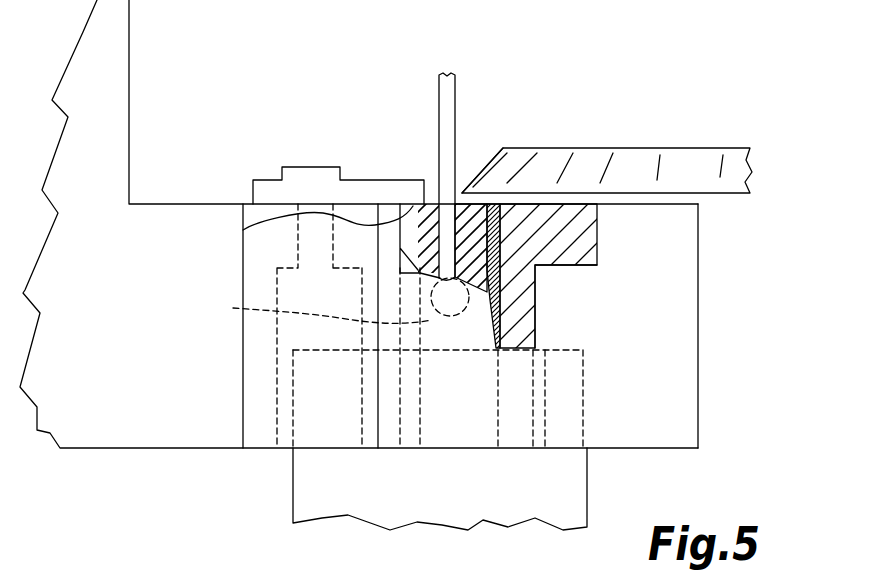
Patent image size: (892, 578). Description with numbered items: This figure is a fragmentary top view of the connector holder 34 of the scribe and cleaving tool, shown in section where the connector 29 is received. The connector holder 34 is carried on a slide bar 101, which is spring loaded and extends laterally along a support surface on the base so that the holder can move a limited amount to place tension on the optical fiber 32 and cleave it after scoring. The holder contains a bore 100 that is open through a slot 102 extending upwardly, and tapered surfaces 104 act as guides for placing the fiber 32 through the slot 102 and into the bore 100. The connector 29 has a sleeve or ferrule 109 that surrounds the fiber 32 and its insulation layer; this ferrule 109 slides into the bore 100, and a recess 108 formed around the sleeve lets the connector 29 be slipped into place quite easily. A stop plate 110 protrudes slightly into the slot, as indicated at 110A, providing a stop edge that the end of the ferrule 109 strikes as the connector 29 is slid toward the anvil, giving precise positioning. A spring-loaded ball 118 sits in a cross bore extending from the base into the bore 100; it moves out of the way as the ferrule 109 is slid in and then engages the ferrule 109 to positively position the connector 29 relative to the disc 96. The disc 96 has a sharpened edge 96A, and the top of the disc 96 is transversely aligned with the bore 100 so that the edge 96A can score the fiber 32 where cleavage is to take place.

The connector 29 is at (577, 473).
The optical fiber 32 is at (438, 97).
The connector holder 34 is at (580, 232).
The disc 96 is at (688, 160).
The sharpened edge 96A is at (462, 192).
The bore 100 is at (505, 228).
The slide bar 101 is at (115, 116).
The slot 102 is at (453, 428).
The tapered surfaces 104 is at (393, 437).
The recess 108 is at (563, 303).
The sleeve or ferrule 109 is at (490, 228).
The stop plate 110 is at (367, 184).
The stop edge 110A is at (243, 230).
The spring-loaded ball 118 is at (330, 303).